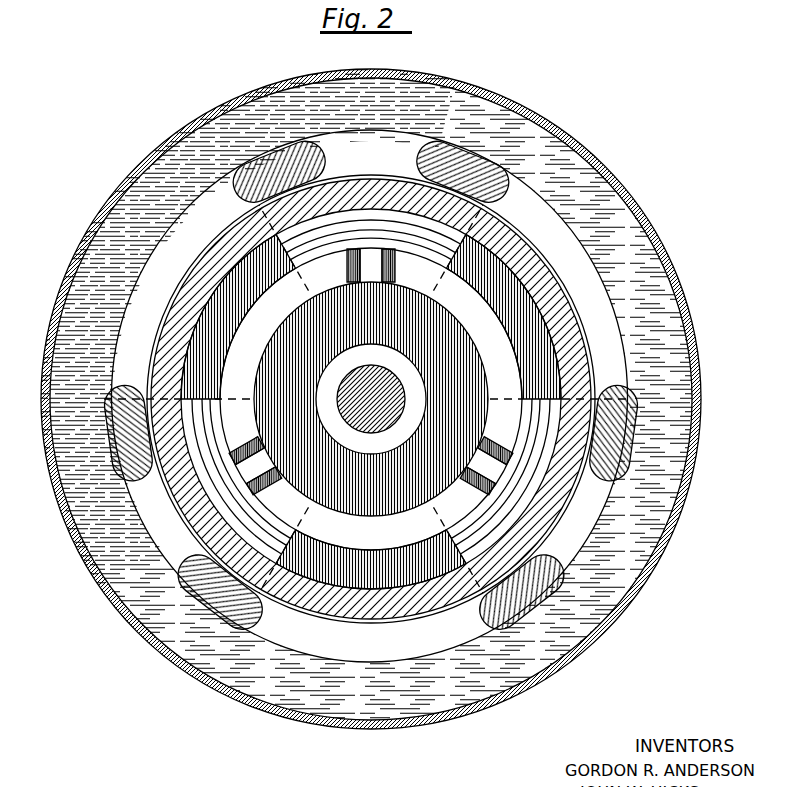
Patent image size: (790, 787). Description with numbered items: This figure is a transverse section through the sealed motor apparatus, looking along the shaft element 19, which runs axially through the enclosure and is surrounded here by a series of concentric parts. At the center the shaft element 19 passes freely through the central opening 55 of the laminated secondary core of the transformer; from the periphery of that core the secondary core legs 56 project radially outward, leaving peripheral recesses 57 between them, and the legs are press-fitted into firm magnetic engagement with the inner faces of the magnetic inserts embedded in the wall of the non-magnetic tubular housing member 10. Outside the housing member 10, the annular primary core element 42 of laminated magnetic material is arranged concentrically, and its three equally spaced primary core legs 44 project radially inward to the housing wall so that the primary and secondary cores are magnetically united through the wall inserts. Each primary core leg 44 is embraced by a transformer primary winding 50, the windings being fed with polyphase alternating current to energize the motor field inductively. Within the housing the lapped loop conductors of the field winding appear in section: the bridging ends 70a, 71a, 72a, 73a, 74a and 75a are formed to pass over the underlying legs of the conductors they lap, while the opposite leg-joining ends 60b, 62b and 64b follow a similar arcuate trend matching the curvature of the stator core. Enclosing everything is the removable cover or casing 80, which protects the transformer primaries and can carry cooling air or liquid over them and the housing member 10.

The tubular housing member 10 is at (200, 527).
The shaft element 19 is at (359, 420).
The annular primary core element 42 is at (493, 128).
The primary core legs 44 is at (562, 278).
The transformer primary winding 50 is at (195, 222).
The central opening 55 is at (415, 366).
The secondary core legs 56 is at (377, 575).
The peripheral recesses 57 is at (375, 252).
The leg-joining end of loop conductor 60b is at (510, 383).
The leg-joining end of loop conductor 62b is at (330, 533).
The leg-joining end of loop conductor 64b is at (230, 355).
The bridging end of loop conductor 70a is at (497, 503).
The bridging end of loop conductor 71a is at (520, 508).
The bridging end of loop conductor 72a is at (227, 477).
The bridging end of loop conductor 73a is at (203, 465).
The bridging end of loop conductor 74a is at (348, 222).
The bridging end of loop conductor 75a is at (370, 233).
The cover or casing 80 is at (186, 128).